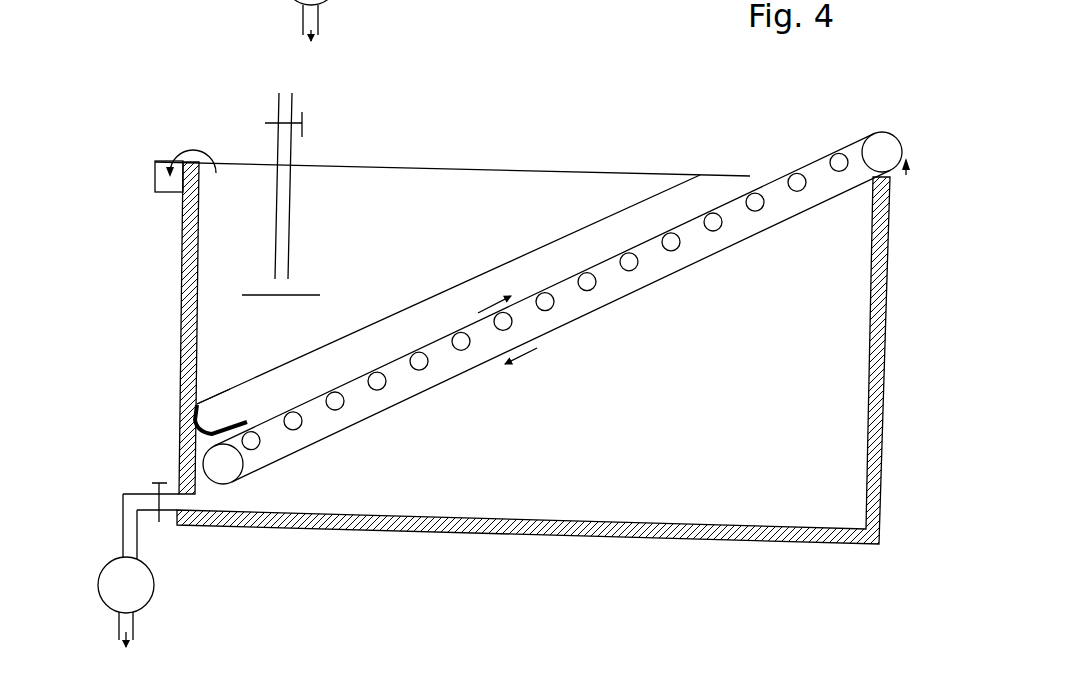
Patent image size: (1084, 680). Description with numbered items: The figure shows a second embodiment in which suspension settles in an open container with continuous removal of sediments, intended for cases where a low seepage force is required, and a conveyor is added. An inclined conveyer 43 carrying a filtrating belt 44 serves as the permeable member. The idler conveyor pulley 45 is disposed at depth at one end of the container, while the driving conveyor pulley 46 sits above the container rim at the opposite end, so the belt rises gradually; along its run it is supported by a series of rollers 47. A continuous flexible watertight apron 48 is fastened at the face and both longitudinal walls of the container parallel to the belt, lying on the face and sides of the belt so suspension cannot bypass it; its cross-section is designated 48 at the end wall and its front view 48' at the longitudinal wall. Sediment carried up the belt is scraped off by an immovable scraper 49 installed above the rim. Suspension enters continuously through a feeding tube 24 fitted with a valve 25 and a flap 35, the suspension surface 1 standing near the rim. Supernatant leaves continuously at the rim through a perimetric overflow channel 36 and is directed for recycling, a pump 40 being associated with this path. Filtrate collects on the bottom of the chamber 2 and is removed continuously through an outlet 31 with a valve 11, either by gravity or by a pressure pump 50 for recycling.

The liquid bath 1 is at (558, 197).
The chamber 2 is at (533, 512).
The valve 11 is at (155, 475).
The feeding tube 24 is at (273, 107).
The valve 25 is at (307, 122).
The outlet 31 is at (140, 538).
The flap 35 is at (311, 285).
The perimetric overflow channel 36 is at (152, 176).
The pump 40 is at (355, 2).
The inclined conveyer 43 is at (607, 277).
The filtrating belt 44 is at (635, 238).
The idler conveyor pulley 45 is at (198, 447).
The driving conveyor pulley 46 is at (875, 123).
The rollers 47 is at (362, 368).
The flexible watertight apron 48 is at (179, 396).
The apron front view 48' is at (194, 356).
The scraper 49 is at (918, 163).
The pressure pump 50 is at (155, 603).